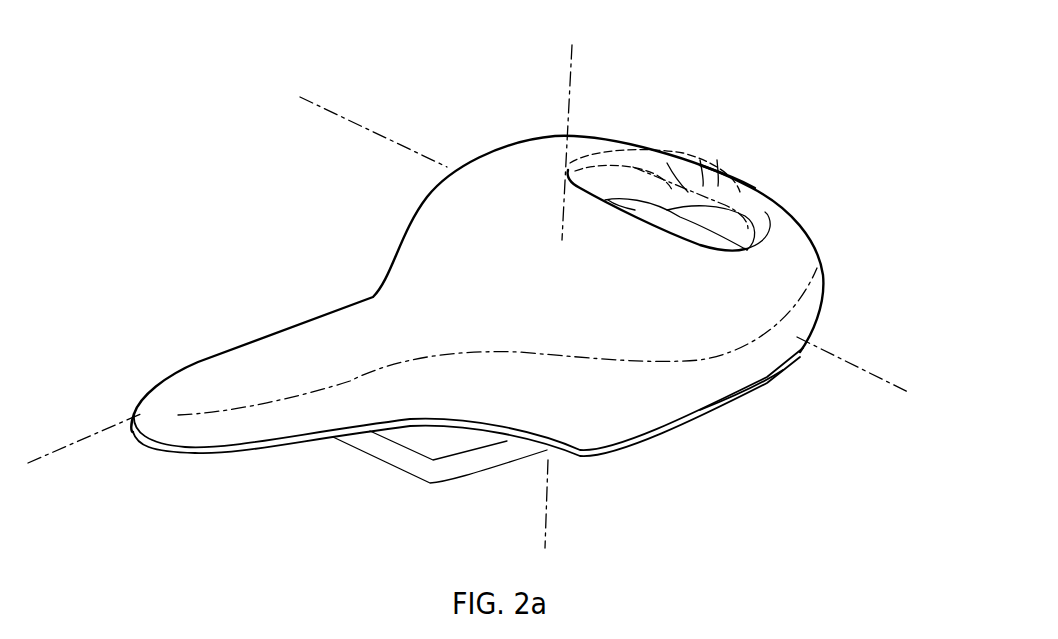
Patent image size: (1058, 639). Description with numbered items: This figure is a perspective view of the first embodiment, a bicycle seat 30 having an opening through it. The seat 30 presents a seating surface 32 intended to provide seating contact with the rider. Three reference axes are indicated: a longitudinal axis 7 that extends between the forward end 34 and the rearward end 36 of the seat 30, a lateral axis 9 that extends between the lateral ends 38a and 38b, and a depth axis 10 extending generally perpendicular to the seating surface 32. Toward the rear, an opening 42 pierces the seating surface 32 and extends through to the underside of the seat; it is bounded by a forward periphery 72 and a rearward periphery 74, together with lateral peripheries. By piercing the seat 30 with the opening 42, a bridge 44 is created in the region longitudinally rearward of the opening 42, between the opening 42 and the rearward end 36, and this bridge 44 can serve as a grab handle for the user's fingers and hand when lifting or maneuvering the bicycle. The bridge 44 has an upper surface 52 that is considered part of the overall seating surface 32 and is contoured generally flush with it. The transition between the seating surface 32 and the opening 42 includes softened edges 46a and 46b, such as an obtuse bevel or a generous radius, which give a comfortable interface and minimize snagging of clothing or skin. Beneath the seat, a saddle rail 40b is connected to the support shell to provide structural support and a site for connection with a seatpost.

The seat 30 is at (203, 176).
The seating surface 32 is at (447, 263).
The forward end 34 is at (134, 414).
The rearward end 36 is at (747, 183).
The lateral end 38a is at (468, 160).
The lateral end 38b is at (783, 342).
The saddle rail 40b is at (387, 453).
The opening 42 is at (618, 165).
The bridge 44 is at (718, 186).
The softened edge 46a is at (608, 200).
The softened edge 46b is at (688, 192).
The upper surface 52 is at (703, 180).
The forward periphery 72 is at (753, 215).
The rearward periphery 74 is at (665, 195).
The longitudinal axis 7 is at (55, 453).
The lateral axis 9 is at (833, 358).
The depth axis 10 is at (567, 72).